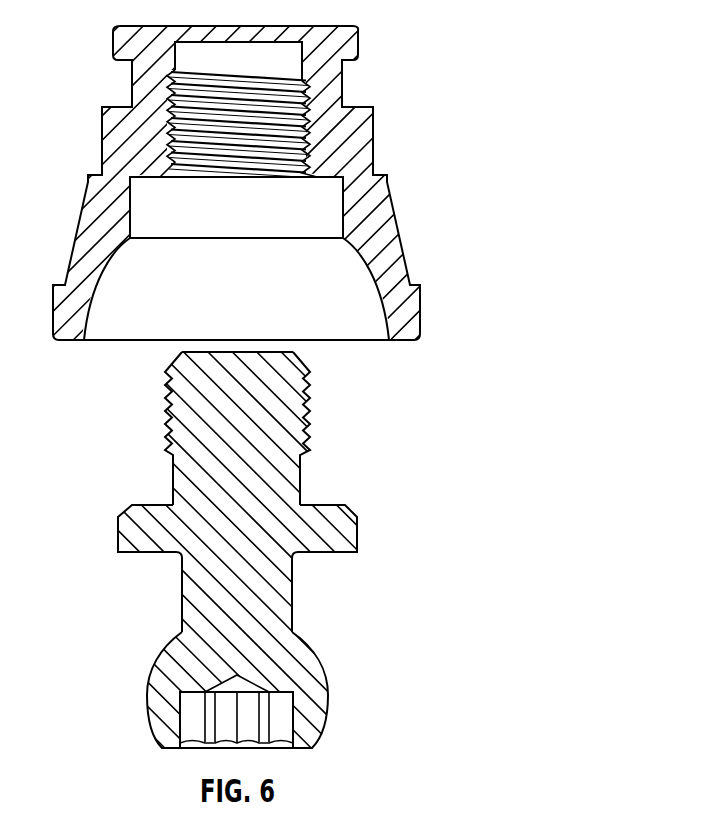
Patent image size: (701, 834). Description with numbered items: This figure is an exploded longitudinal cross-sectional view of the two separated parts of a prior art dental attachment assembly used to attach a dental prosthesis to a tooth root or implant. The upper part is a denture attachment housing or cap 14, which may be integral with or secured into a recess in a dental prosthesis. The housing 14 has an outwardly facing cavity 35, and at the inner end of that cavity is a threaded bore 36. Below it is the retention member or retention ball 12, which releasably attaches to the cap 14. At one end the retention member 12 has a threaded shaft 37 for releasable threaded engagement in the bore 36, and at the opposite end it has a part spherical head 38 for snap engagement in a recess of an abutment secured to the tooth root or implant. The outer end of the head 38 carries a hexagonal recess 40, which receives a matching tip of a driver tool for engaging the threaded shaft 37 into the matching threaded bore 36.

The retention member 12 is at (269, 557).
The denture attachment housing 14 is at (268, 183).
The cavity 35 is at (250, 303).
The threaded bore 36 is at (310, 83).
The threaded shaft 37 is at (306, 396).
The part spherical head 38 is at (328, 702).
The hexagonal recess 40 is at (210, 705).